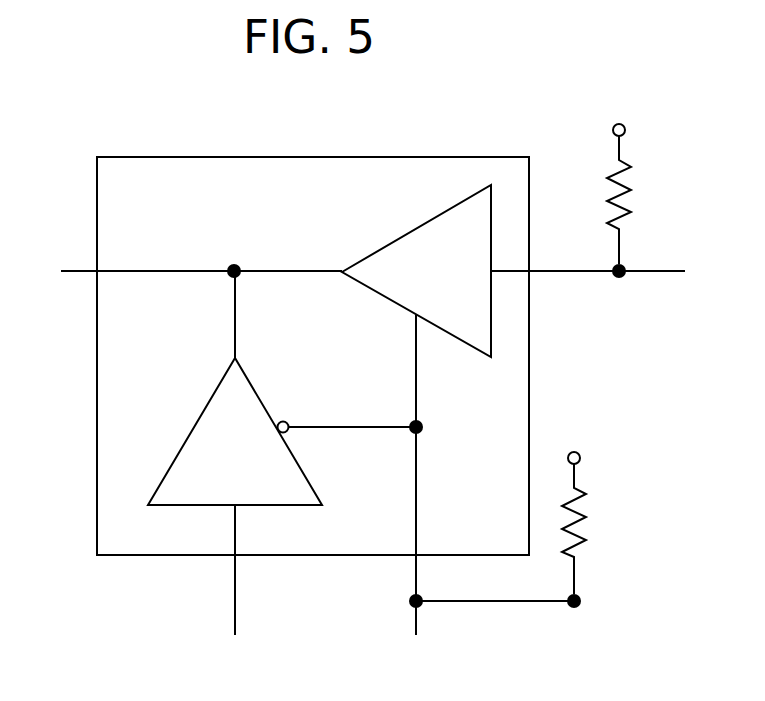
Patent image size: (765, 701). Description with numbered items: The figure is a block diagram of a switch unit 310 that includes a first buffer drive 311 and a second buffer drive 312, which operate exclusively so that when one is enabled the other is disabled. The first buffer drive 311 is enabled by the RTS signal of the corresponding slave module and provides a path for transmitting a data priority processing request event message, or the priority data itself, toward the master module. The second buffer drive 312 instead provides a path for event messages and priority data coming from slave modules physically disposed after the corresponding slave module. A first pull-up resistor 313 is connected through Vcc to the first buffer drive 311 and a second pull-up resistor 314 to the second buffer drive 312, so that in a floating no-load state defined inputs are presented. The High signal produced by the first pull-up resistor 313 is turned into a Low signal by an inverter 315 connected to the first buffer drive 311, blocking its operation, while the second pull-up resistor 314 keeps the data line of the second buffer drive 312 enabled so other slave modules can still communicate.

The switch unit 310 is at (300, 157).
The first buffer drive 311 is at (187, 437).
The second buffer drive 312 is at (430, 218).
The first pull-up resistor 313 is at (588, 506).
The second pull-up resistor 314 is at (634, 178).
The inverter 315 is at (288, 422).